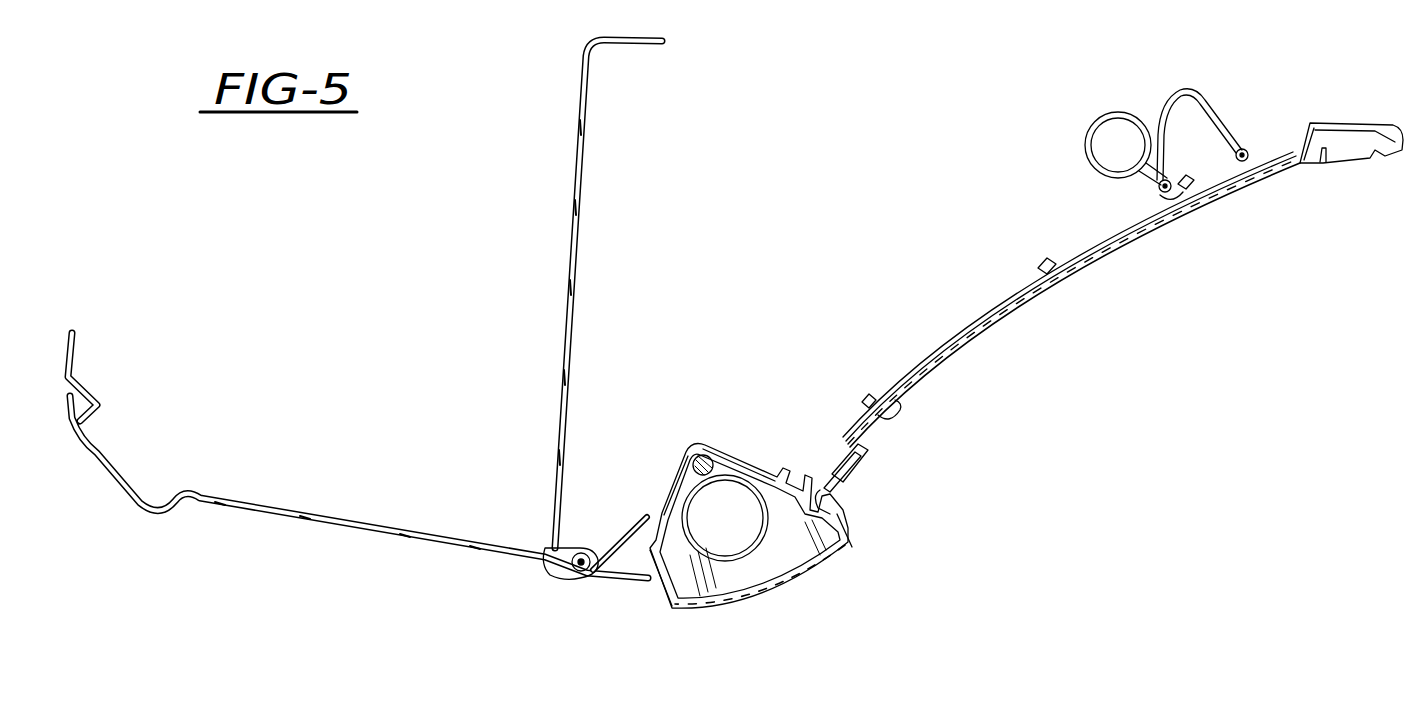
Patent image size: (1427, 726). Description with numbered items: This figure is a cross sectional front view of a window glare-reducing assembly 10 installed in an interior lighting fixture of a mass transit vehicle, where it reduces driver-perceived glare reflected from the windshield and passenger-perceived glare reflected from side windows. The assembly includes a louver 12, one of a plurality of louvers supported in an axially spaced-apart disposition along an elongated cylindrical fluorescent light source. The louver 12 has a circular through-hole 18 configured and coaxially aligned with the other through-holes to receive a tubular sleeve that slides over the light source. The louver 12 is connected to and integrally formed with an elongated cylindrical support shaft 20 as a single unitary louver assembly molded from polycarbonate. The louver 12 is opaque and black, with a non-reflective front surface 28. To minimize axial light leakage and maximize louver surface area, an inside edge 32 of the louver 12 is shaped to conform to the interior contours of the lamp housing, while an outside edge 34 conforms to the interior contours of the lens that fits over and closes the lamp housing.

The window glare-reducing assembly 10 is at (830, 543).
The louver 12 is at (733, 459).
The circular through-hole 18 is at (731, 482).
The elongated cylindrical support shaft 20 is at (702, 449).
The non-reflective front surface 28 is at (777, 560).
The inside edge 32 is at (674, 487).
The outside edge 34 is at (697, 610).